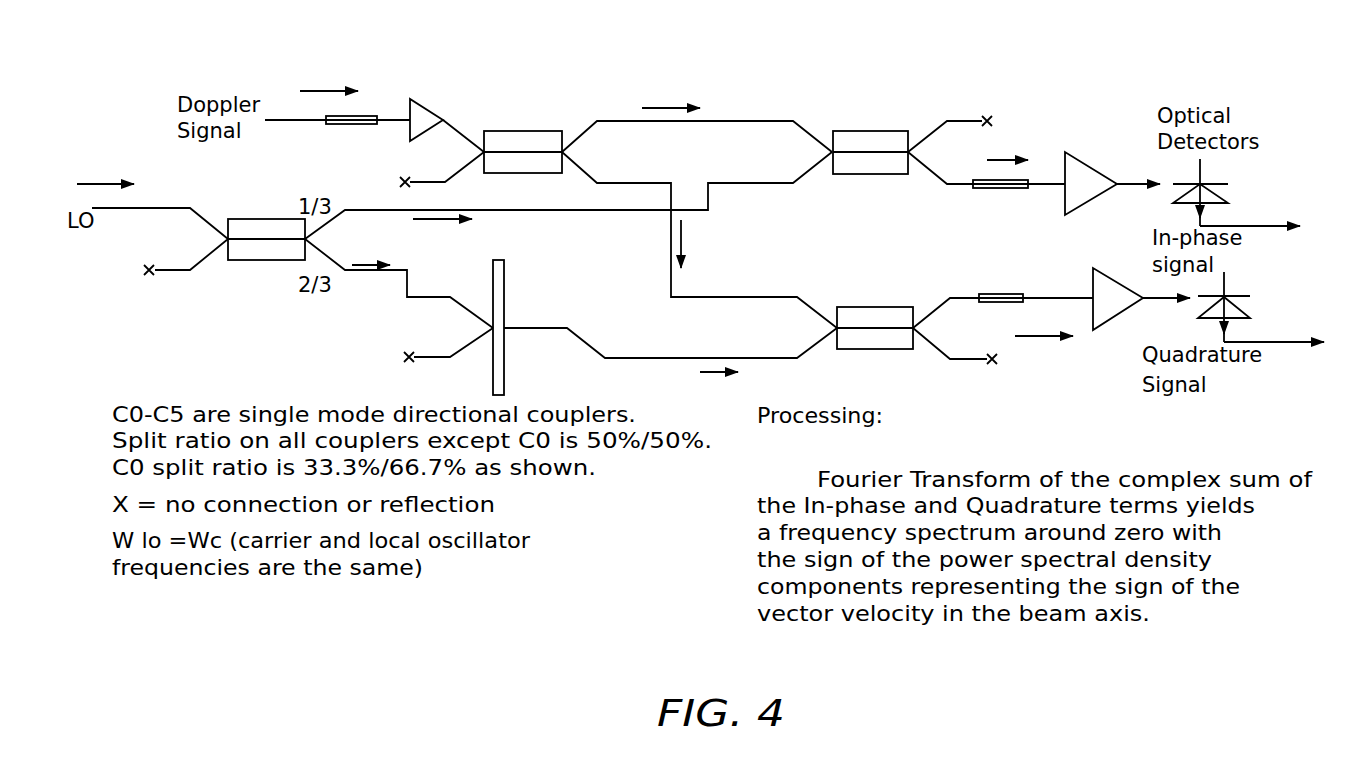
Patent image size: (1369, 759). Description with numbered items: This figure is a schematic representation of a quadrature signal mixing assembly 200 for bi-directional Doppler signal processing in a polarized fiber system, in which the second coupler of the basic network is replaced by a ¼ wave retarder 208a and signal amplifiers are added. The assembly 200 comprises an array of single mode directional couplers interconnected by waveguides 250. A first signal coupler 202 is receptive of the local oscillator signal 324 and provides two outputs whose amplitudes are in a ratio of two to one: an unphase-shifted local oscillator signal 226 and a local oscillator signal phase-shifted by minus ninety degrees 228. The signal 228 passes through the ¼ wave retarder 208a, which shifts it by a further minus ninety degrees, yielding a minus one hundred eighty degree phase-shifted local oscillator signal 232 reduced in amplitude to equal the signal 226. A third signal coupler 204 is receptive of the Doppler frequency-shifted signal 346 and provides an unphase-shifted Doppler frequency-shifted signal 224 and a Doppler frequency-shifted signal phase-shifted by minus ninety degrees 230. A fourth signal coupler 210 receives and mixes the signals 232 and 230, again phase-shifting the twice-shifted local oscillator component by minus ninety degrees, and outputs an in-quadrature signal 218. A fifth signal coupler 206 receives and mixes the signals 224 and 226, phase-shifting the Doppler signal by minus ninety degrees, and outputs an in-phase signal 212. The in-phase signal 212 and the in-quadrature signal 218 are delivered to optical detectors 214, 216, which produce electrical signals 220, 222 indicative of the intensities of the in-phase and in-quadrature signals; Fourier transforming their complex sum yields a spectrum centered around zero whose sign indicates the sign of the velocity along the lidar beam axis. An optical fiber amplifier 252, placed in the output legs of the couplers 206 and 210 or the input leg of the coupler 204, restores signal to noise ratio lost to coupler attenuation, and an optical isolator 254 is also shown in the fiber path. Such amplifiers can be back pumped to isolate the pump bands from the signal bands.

The quadrature signal mixing assembly 200 is at (598, 596).
The first signal coupler 202 is at (250, 261).
The third signal coupler 204 is at (530, 174).
The fifth signal coupler 206 is at (854, 130).
The ¼ wave retarder 208a is at (506, 305).
The fourth signal coupler 210 is at (892, 306).
The in-phase signal 212 is at (1010, 159).
The optical detector 214 is at (1220, 192).
The optical detector 216 is at (1236, 306).
The in-quadrature signal 218 is at (1046, 338).
The electrical signal 220 is at (1290, 225).
The electrical signal 222 is at (1306, 343).
The unphase-shifted Doppler frequency-shifted signal 224 is at (663, 106).
The unphase-shifted local oscillator signal 226 is at (450, 221).
The local oscillator signal phase-shifted by −90 degrees 228 is at (364, 267).
The Doppler frequency-shifted signal phase-shifted by −90 degrees 230 is at (683, 244).
The −180 phase-shifted local oscillator signal 232 is at (706, 374).
The waveguides 250 is at (200, 214).
The optical fiber amplifier 252 is at (428, 101).
The optical isolator 254 is at (352, 125).
The local oscillator signal 324 is at (90, 183).
The Doppler frequency-shifted signal 346 is at (311, 90).